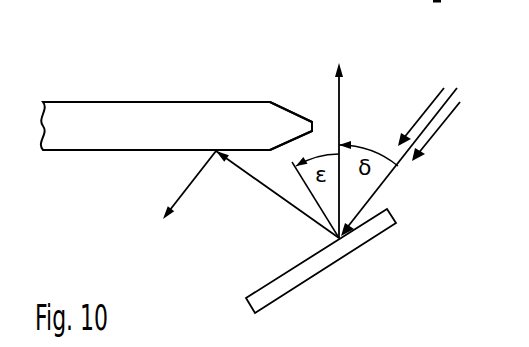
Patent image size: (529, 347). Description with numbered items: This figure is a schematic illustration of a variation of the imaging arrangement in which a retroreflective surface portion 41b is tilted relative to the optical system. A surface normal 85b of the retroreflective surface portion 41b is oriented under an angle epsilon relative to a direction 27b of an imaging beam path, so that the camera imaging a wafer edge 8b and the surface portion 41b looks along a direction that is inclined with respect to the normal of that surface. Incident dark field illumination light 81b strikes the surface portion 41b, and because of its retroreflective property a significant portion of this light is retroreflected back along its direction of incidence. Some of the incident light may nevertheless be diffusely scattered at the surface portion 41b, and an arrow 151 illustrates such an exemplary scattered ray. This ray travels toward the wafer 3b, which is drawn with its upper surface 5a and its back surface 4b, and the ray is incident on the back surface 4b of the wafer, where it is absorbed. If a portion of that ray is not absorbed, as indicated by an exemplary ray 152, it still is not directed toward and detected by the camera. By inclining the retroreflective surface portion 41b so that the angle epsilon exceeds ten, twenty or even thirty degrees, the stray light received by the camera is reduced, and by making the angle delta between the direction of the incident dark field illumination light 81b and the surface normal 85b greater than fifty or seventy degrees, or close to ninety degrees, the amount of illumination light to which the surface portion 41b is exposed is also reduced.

The wafer 3b is at (75, 72).
The back surface 4b is at (84, 152).
The top surface of waveguide 5a is at (140, 101).
The wafer edge 8b is at (313, 124).
The direction of an imaging beam path 27b is at (341, 100).
The retroreflective surface portion 41b is at (394, 216).
The incident dark field illumination light 81b is at (441, 114).
The surface normal 85b is at (309, 198).
The arrow 151 is at (255, 181).
The exemplary ray 152 is at (190, 180).